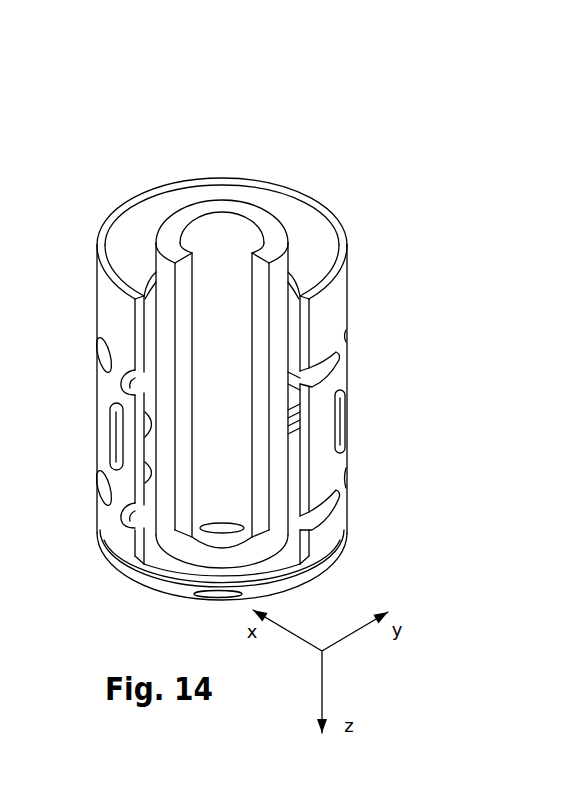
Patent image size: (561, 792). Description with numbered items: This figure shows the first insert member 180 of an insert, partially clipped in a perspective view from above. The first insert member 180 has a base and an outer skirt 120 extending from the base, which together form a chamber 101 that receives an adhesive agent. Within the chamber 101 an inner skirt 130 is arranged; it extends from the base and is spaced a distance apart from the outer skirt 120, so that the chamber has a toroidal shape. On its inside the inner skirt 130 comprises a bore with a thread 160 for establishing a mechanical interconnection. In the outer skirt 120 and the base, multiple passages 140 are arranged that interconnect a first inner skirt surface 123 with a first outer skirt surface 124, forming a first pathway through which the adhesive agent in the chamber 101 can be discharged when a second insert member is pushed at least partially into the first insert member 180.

The chamber 101 is at (227, 335).
The outer skirt 120 is at (227, 369).
The first inner skirt surface 123 is at (303, 245).
The first outer skirt surface 124 is at (333, 311).
The inner skirt 130 is at (163, 319).
The passages 140 is at (320, 373).
The thread 160 is at (233, 250).
The first insert member 180 is at (282, 150).